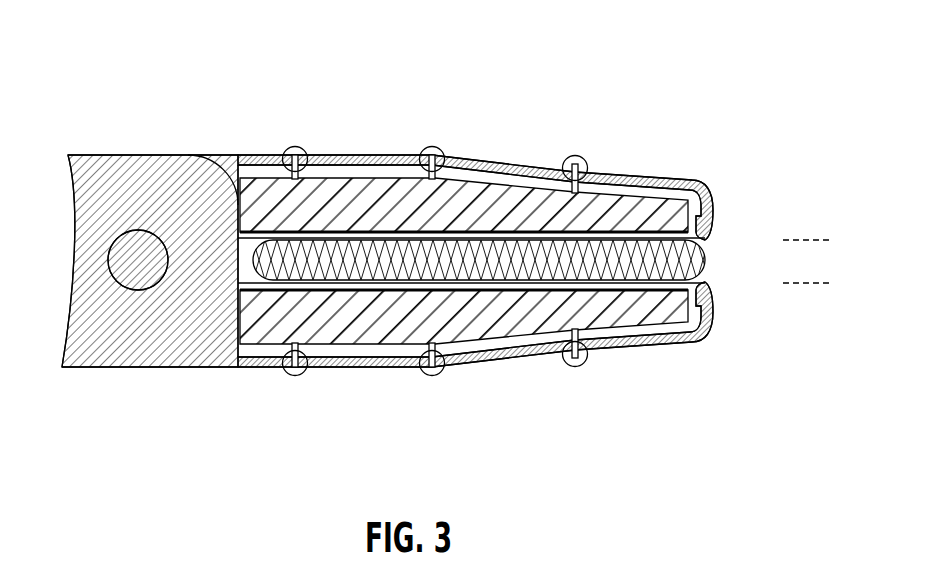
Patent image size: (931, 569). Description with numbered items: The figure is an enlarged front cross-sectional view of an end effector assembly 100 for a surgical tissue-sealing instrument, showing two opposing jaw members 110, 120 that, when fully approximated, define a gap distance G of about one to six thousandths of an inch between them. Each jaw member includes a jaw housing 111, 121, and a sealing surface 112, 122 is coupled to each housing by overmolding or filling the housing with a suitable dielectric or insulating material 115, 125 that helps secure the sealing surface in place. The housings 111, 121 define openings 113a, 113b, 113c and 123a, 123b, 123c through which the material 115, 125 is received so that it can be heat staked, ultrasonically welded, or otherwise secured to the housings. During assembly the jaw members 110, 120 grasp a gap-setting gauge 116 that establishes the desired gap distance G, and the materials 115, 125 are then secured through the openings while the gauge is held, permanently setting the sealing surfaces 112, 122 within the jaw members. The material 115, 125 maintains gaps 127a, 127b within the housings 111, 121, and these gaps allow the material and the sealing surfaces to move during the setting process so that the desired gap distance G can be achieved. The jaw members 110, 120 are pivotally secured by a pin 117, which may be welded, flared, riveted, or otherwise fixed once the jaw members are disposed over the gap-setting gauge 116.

The end effector assembly 100 is at (636, 32).
The jaw member 110 is at (712, 208).
The jaw housing 111 is at (614, 175).
The sealing surface 112 is at (553, 237).
The opening 113a is at (295, 140).
The opening 113b is at (432, 140).
The third upper clip 113c is at (574, 150).
The material 115 is at (373, 198).
The gap-setting gauge 116 is at (707, 262).
The pin 117 is at (138, 253).
The jaw member 120 is at (712, 313).
The jaw housing 121 is at (598, 347).
The sealing surface 122 is at (498, 288).
The opening 123a is at (294, 382).
The opening 123b is at (432, 382).
The third lower clip 123c is at (577, 377).
The material 125 is at (345, 320).
The gap 127a is at (333, 170).
The gap 127b is at (343, 354).
The gap distance G is at (808, 207).